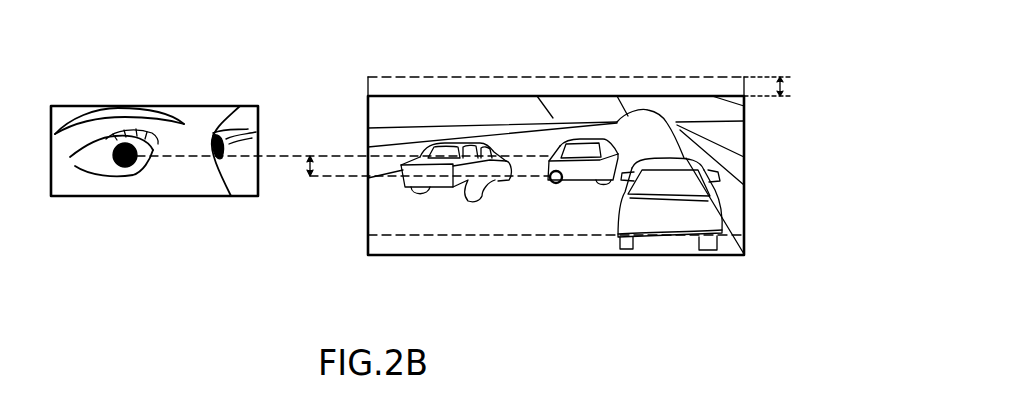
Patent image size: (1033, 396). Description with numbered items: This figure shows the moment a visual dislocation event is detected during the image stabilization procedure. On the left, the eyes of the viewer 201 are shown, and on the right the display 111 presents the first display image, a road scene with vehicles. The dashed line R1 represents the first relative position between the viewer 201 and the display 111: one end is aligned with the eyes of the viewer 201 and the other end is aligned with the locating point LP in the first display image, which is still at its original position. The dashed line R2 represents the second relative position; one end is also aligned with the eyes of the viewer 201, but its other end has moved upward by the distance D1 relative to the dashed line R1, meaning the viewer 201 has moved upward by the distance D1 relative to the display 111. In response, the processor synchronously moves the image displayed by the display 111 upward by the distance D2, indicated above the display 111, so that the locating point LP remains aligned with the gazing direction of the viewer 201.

The viewer 201 is at (70, 105).
The display 111 is at (744, 222).
The distance D1 is at (295, 173).
The distance D2 is at (596, 89).
The dashed line R1 is at (350, 178).
The dashed line R2 is at (282, 154).
The locating point LP is at (557, 183).